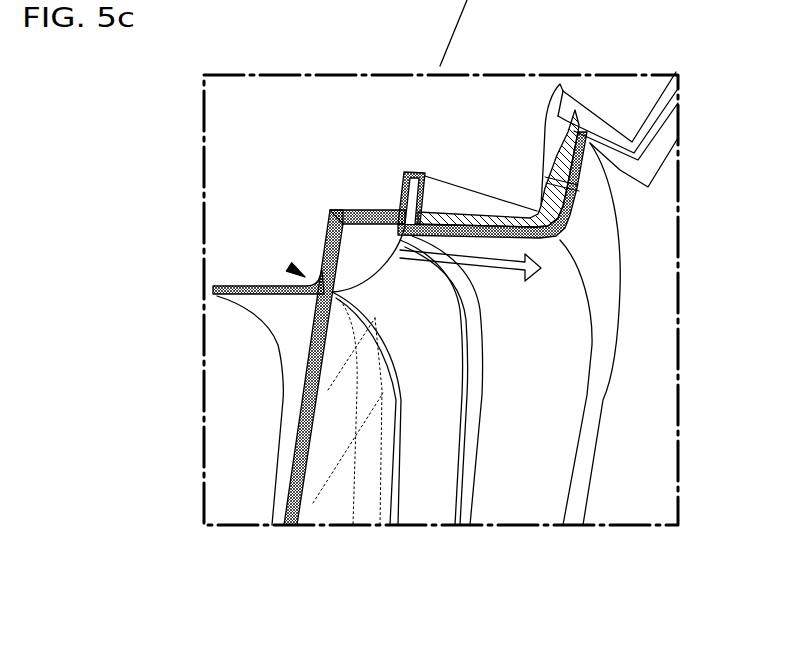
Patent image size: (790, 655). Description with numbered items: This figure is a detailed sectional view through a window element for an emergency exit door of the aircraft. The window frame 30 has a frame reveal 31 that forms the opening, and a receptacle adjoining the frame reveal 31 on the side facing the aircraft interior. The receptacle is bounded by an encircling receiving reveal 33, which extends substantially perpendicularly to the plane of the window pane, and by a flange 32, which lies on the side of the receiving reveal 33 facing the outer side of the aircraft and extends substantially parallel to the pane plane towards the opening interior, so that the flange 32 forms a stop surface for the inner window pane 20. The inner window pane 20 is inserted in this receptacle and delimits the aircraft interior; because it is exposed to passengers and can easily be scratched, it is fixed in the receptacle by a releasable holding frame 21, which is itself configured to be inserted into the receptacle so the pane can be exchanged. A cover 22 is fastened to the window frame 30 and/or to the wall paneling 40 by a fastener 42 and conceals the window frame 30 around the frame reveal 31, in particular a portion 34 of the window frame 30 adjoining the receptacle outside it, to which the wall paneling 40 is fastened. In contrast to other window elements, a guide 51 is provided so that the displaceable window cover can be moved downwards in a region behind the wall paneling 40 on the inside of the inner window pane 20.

The inner window pane 20 is at (300, 441).
The holding frame 21 is at (407, 411).
The cover 22 is at (598, 362).
The window frame 30 is at (230, 240).
The frame reveal 31 is at (238, 277).
The flange 32 is at (250, 341).
The encircling receiving reveal 33 is at (375, 157).
The portion of the window frame 34 is at (421, 127).
The wall paneling 40 is at (613, 95).
The fastener 42 is at (498, 130).
The guide 51 is at (351, 163).